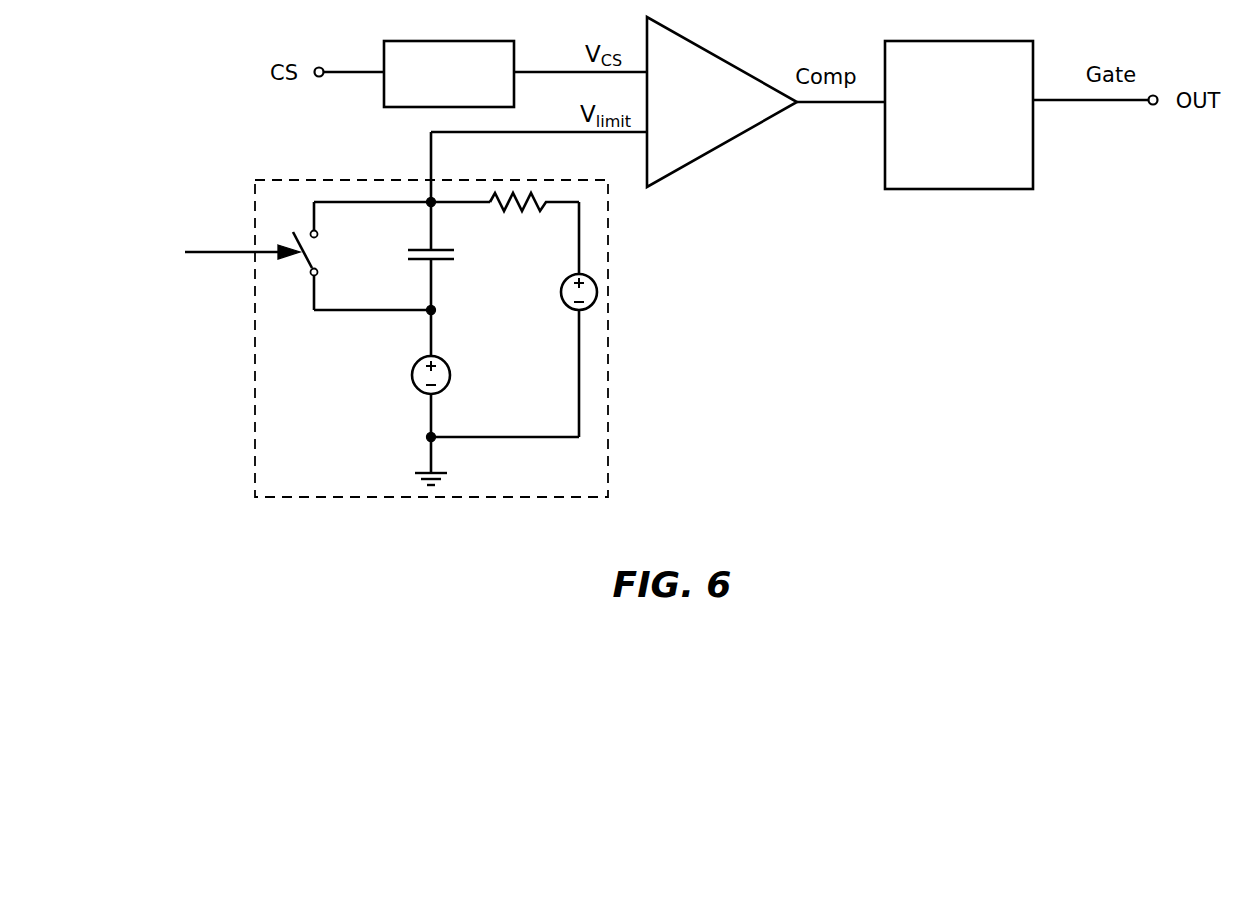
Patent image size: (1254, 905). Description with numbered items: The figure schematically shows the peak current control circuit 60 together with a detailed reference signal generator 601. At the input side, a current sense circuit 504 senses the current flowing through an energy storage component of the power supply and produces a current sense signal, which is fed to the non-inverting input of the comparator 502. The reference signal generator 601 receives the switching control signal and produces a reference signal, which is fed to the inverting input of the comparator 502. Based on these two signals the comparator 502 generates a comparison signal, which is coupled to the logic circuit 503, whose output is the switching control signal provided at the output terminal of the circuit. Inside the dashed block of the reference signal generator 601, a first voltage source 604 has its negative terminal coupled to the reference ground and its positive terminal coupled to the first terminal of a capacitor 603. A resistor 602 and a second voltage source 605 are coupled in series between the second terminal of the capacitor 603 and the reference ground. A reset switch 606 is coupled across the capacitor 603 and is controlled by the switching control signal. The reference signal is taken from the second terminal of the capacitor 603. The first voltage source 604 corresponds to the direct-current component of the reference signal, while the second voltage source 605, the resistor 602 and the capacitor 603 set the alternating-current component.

The peak current control circuit 60 is at (206, 62).
The comparator 502 is at (723, 47).
The logic circuit 503 is at (958, 40).
The current sense circuit 504 is at (449, 74).
The reference signal generator 601 is at (374, 177).
The resistor 602 is at (534, 219).
The capacitor 603 is at (450, 256).
The first voltage source 604 is at (458, 373).
The second voltage source 605 is at (556, 319).
The reset switch 606 is at (332, 256).